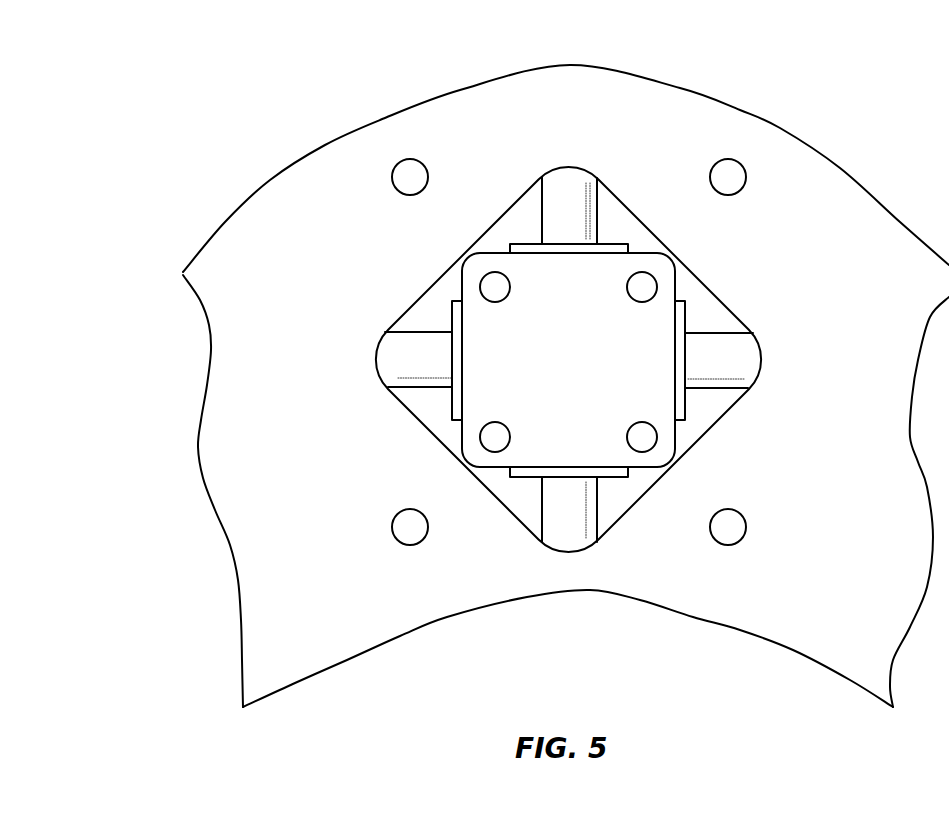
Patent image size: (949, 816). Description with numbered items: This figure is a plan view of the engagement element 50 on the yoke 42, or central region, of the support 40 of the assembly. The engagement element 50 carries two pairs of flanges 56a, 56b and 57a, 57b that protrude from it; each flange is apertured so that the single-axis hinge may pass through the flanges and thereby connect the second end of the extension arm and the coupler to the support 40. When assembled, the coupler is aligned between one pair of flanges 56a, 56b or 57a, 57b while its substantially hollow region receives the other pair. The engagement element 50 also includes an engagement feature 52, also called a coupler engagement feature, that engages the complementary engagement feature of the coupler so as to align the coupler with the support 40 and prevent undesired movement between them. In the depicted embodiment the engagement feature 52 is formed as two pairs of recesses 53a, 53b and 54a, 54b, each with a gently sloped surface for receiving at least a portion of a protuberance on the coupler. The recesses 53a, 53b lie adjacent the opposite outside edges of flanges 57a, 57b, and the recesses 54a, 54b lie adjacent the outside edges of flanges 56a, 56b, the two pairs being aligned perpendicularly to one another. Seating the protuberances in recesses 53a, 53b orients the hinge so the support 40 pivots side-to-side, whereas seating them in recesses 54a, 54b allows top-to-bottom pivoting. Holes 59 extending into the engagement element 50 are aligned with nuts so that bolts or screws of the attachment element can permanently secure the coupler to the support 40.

The support 40 is at (290, 111).
The yoke 42 is at (503, 115).
The engagement element 50 is at (585, 143).
The engagement feature 52 is at (640, 333).
The recess 53a is at (398, 357).
The recess 53b is at (728, 354).
The recess 54a is at (575, 197).
The recess 54b is at (563, 523).
The flange 56a is at (622, 242).
The flange 56b is at (613, 478).
The flange 57a is at (452, 414).
The flange 57b is at (687, 408).
The hole 59 is at (488, 430).